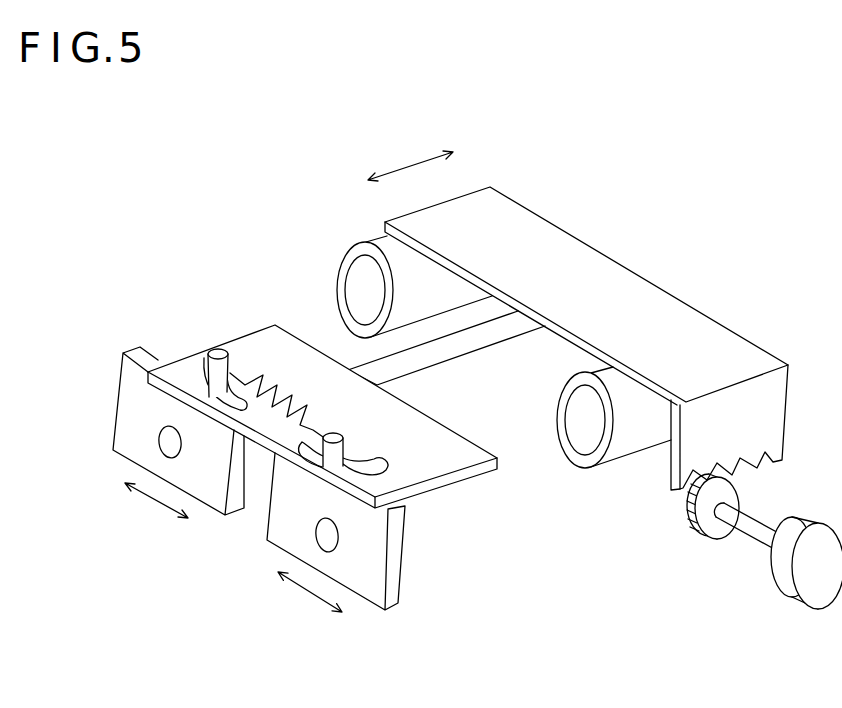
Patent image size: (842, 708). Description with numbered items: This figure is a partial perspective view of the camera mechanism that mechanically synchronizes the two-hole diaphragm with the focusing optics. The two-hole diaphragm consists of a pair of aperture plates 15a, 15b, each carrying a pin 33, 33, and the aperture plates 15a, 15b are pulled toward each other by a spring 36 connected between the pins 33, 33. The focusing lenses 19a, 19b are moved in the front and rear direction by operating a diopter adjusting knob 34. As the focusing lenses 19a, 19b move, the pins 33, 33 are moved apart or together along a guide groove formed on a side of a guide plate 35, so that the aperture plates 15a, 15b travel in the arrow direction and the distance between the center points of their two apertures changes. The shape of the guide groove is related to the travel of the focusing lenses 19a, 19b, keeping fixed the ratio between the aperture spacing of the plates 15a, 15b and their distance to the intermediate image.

The aperture plate 15a is at (368, 592).
The aperture plate 15b is at (135, 398).
The focusing lens 19a is at (361, 277).
The focusing lens 19b is at (591, 443).
The pin 33 is at (217, 353).
The diopter adjusting knob 34 is at (790, 593).
The guide plate 35 is at (425, 470).
The spring 36 is at (278, 386).